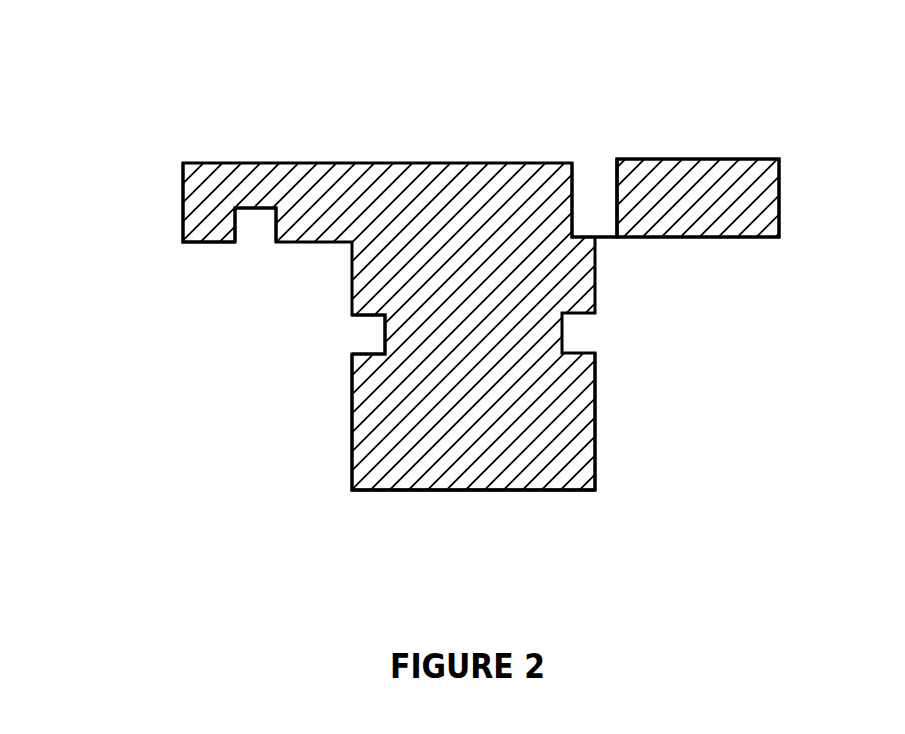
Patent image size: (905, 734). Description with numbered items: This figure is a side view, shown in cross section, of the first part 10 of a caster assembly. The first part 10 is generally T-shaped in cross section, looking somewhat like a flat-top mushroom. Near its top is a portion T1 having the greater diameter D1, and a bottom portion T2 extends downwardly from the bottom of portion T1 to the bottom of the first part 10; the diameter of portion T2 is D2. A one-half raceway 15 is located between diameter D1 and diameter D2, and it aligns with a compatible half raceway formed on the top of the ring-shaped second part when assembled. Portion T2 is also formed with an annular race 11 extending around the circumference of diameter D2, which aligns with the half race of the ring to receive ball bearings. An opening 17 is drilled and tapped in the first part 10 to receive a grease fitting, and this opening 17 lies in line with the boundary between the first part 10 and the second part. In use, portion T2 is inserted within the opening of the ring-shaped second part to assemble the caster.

The first part 10 is at (212, 116).
The race 11 is at (365, 335).
The one-half raceway 15 is at (256, 236).
The opening 17 is at (590, 172).
The greater diameter D1 is at (182, 206).
The diameter of portion T2 D2 is at (349, 457).
The portion having the greater diameter T1 is at (779, 159).
The bottom portion T2 is at (586, 414).